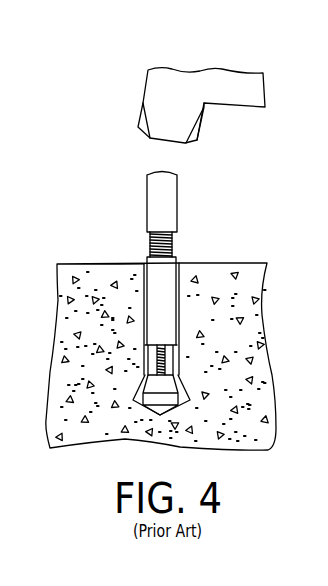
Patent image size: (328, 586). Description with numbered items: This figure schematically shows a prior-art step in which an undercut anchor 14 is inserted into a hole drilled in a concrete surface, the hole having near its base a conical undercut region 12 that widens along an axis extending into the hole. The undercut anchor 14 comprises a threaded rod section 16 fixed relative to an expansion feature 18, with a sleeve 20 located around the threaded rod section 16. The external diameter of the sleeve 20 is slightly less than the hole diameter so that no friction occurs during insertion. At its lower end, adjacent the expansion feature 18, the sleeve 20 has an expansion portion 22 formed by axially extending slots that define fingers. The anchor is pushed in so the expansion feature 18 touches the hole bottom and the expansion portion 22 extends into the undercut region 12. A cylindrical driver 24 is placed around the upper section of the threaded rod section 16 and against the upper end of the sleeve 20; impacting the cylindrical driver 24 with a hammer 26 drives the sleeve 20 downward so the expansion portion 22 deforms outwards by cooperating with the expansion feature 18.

The undercut region 12 is at (103, 368).
The undercut anchor 14 is at (187, 252).
The threaded rod section 16 is at (153, 245).
The expansion feature 18 is at (165, 390).
The sleeve 20 is at (145, 312).
The expansion portion 22 is at (153, 363).
The cylindrical driver 24 is at (165, 205).
The hammer 26 is at (232, 88).